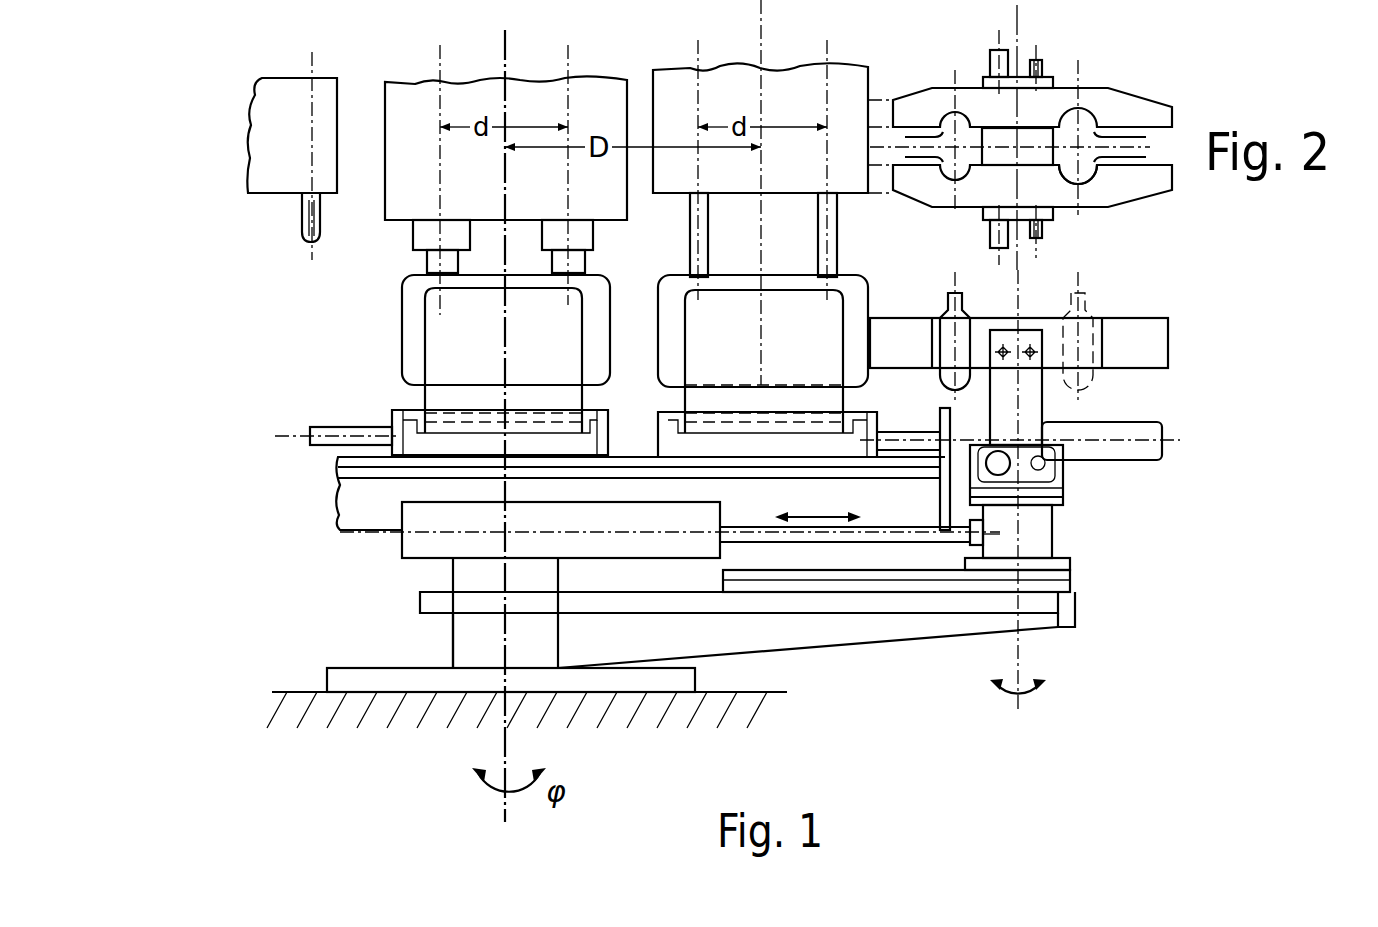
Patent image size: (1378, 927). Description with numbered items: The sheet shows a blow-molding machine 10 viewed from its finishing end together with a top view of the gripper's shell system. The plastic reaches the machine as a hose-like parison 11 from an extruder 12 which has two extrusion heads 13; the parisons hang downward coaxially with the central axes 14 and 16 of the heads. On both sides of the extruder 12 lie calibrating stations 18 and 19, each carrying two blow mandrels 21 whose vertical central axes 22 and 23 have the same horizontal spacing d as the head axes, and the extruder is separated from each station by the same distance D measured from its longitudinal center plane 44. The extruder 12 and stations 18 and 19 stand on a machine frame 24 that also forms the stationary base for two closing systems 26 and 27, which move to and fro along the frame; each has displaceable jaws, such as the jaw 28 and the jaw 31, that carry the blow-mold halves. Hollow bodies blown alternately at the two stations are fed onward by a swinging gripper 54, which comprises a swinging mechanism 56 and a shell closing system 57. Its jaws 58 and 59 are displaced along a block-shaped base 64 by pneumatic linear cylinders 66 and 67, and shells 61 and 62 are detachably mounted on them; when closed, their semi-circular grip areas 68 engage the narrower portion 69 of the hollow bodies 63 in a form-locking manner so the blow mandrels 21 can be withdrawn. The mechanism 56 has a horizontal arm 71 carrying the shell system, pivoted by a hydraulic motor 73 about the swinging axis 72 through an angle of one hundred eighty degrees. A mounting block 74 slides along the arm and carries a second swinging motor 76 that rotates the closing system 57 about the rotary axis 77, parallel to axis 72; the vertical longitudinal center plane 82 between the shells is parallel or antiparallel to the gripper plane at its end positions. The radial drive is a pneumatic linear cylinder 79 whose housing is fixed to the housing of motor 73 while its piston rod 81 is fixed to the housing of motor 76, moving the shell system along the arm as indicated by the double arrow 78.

In FIG. 1, the blow-molding machine 10 is at (266, 298).
In FIG. 1, the parison 11 is at (552, 262).
In FIG. 1, the extruder 12 is at (527, 100).
In FIG. 1, the extrusion heads 13 is at (552, 238).
In FIG. 1, the central axis 14 is at (440, 63).
In FIG. 1, the central axis 16 is at (568, 56).
In FIG. 1, the calibrating station 18 is at (281, 97).
In FIG. 1, the calibrating station 19 is at (784, 88).
In FIG. 1, the blow mandrels 21 is at (302, 224).
In FIG. 1, the central axis 22 is at (314, 64).
In FIG. 1, the central axis 23 is at (828, 60).
In FIG. 1, the machine frame 24 is at (332, 516).
In FIG. 1, the closing system 26 is at (418, 296).
In FIG. 1, the closing system 27 is at (678, 298).
In FIG. 1, the jaw 28 is at (440, 322).
In FIG. 1, the jaw 31 is at (703, 332).
In FIG. 1, the longitudinal center plane 44 is at (505, 63).
In FIG. 1, the swinging gripper 54 is at (1175, 343).
In FIG. 1, the swinging mechanism 56 is at (851, 649).
In FIG. 1, the shell closing system 57 is at (1050, 405).
In FIG. 1, the jaw 58 is at (1000, 393).
In FIG. 2, the jaw 58 is at (1053, 215).
In FIG. 2, the jaw 59 is at (1055, 83).
In FIG. 2, the shell 61 is at (1118, 110).
In FIG. 1, the shell 62 is at (1136, 330).
In FIG. 2, the shell 62 is at (1128, 190).
In FIG. 1, the hollow bodies 63 is at (1073, 305).
In FIG. 2, the block-shaped base 64 is at (1119, 137).
In FIG. 1, the pneumatic linear cylinder 66 is at (996, 466).
In FIG. 2, the pneumatic linear cylinder 66 is at (990, 232).
In FIG. 2, the pneumatic linear cylinder 67 is at (990, 62).
In FIG. 2, the grip areas 68 is at (912, 147).
In FIG. 1, the narrower portion 69 is at (940, 340).
In FIG. 1, the horizontal arm 71 is at (927, 627).
In FIG. 1, the swinging axis 72 is at (505, 640).
In FIG. 1, the hydraulic motor 73 is at (465, 578).
In FIG. 1, the mounting block 74 is at (1078, 566).
In FIG. 1, the second swinging motor 76 is at (1040, 531).
In FIG. 1, the rotary axis 77 is at (1062, 651).
In FIG. 1, the feed direction 78 is at (832, 497).
In FIG. 1, the pneumatic linear cylinder 79 is at (688, 507).
In FIG. 1, the piston rod 81 is at (807, 545).
In FIG. 2, the vertical longitudinal center plane 82 is at (1108, 150).